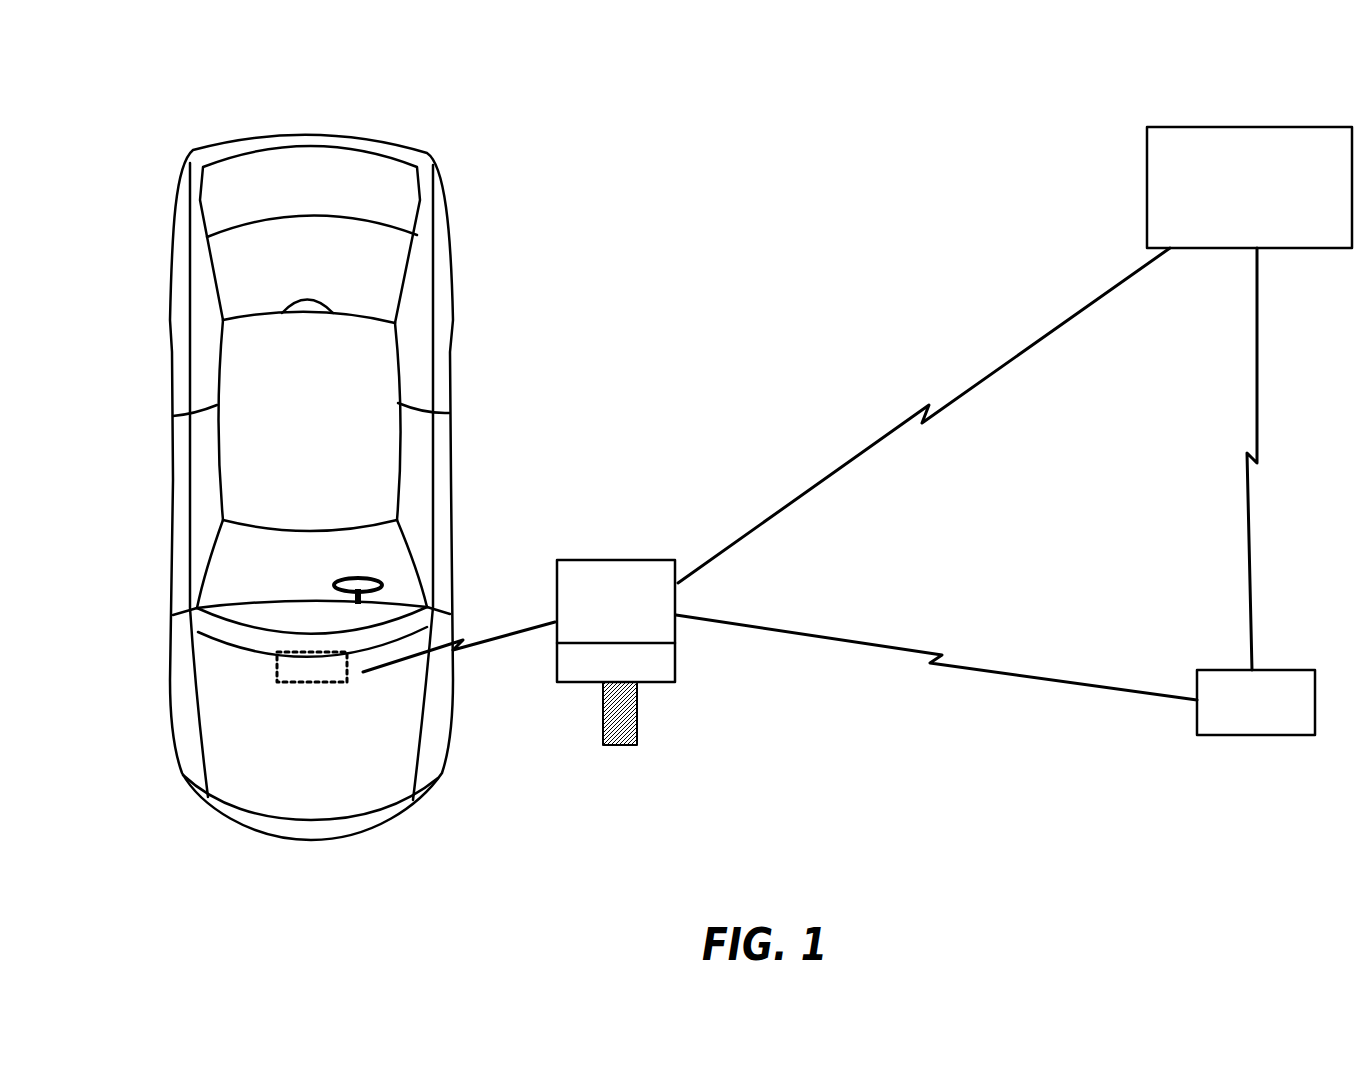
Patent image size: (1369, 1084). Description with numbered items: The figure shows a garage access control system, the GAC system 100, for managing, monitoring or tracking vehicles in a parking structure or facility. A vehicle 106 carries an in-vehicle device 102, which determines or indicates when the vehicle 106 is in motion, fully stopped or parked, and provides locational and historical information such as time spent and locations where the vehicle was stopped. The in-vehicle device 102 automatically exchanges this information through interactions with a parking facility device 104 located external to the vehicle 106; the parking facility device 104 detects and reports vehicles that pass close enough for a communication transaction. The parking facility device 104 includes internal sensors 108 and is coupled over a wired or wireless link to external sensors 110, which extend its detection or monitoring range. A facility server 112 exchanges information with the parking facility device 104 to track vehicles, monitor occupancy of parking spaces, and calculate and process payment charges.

The GAC system 100 is at (125, 74).
The in-vehicle device 102 is at (313, 683).
The parking facility device 104 is at (618, 560).
The vehicle 106 is at (447, 225).
The internal sensors 108 is at (675, 667).
The external sensors 110 is at (1256, 702).
The facility server 112 is at (1249, 187).